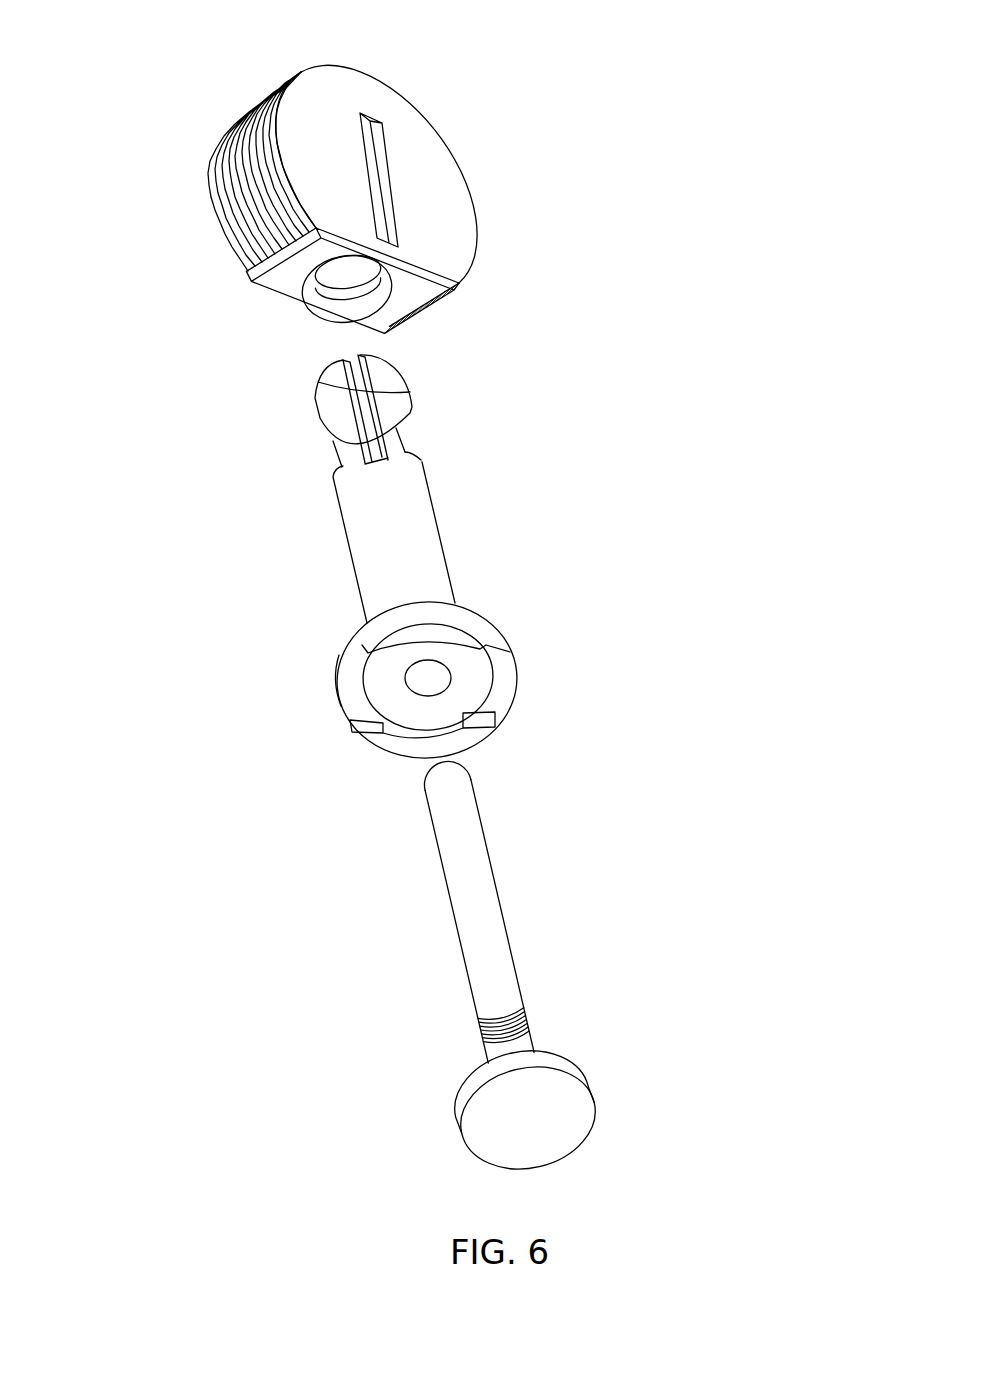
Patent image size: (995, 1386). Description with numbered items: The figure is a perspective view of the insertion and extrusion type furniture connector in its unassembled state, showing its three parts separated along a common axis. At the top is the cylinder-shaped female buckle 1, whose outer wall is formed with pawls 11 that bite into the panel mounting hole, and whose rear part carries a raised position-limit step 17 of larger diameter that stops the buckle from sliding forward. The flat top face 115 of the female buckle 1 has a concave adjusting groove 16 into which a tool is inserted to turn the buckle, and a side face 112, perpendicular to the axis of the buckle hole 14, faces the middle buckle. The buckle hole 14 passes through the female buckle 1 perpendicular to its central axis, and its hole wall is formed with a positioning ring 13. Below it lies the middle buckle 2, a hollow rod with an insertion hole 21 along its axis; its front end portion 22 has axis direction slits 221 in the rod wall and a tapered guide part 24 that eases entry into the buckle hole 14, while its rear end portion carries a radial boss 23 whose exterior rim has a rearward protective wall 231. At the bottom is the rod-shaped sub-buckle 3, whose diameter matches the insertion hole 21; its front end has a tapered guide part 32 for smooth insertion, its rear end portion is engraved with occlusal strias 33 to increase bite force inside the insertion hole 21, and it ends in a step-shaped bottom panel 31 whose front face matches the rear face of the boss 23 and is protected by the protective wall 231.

The female buckle 1 is at (364, 231).
The pawls 11 is at (223, 198).
The position-limit step 17 is at (284, 88).
The adjusting groove 16 is at (373, 157).
The top face 115 is at (427, 193).
The side face 112 is at (413, 287).
The positioning ring 13 is at (363, 307).
The buckle hole 14 is at (340, 272).
The middle buckle 2 is at (393, 559).
The front end portion 22 is at (381, 408).
The axis direction slits 221 is at (343, 357).
The guide part 24 is at (318, 372).
The boss 23 is at (409, 673).
The protective wall 231 is at (470, 617).
The insertion hole 21 is at (428, 677).
The sub-buckle 3 is at (544, 962).
The guide part 32 is at (398, 761).
The occlusal strias 33 is at (527, 1017).
The bottom panel 31 is at (558, 1065).